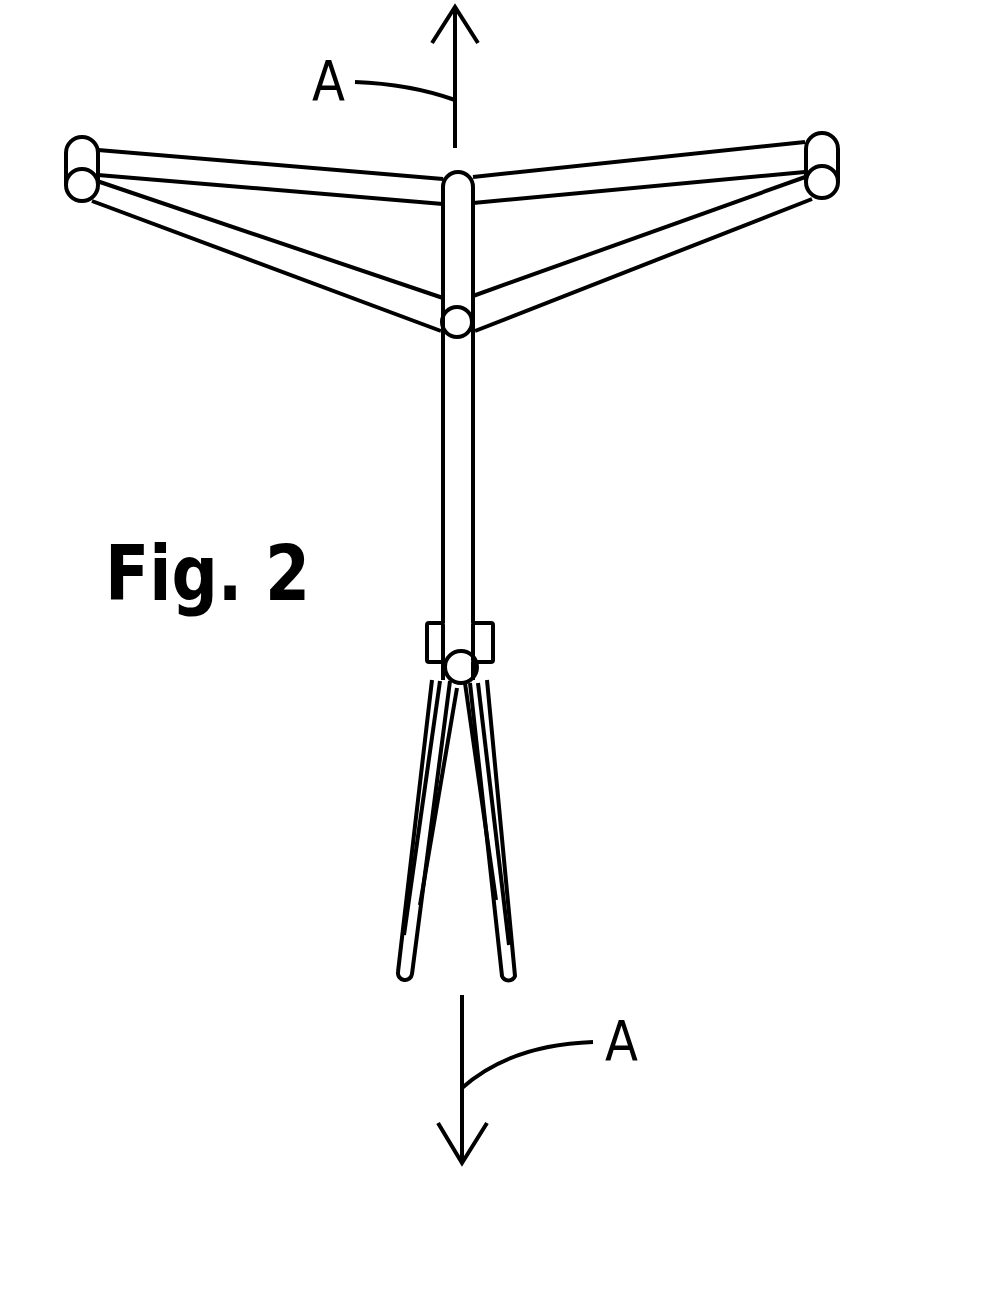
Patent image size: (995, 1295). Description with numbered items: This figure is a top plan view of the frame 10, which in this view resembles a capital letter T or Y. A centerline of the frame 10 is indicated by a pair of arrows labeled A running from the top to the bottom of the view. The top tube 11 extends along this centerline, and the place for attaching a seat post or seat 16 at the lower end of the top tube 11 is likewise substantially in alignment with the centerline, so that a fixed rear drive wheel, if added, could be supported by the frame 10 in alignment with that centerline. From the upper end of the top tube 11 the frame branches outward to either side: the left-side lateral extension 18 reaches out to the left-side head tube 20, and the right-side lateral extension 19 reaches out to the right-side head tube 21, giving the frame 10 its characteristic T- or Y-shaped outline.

The frame 10 is at (560, 563).
The top tube 11 is at (455, 383).
The place for attaching a seat post or seat 16 is at (462, 670).
The left-side lateral extension 18 is at (352, 186).
The right-side lateral extension 19 is at (580, 277).
The left-side head tube 20 is at (80, 155).
The right-side head tube 21 is at (830, 152).